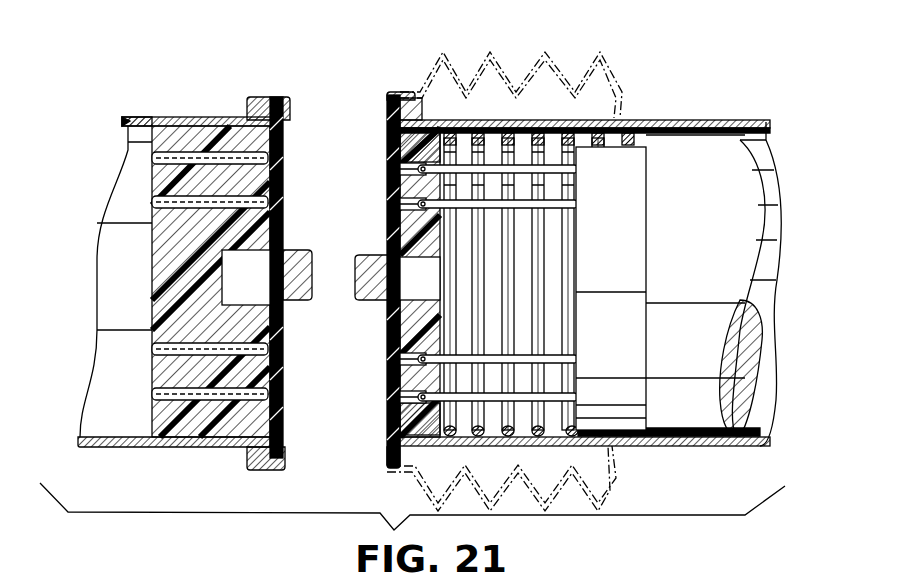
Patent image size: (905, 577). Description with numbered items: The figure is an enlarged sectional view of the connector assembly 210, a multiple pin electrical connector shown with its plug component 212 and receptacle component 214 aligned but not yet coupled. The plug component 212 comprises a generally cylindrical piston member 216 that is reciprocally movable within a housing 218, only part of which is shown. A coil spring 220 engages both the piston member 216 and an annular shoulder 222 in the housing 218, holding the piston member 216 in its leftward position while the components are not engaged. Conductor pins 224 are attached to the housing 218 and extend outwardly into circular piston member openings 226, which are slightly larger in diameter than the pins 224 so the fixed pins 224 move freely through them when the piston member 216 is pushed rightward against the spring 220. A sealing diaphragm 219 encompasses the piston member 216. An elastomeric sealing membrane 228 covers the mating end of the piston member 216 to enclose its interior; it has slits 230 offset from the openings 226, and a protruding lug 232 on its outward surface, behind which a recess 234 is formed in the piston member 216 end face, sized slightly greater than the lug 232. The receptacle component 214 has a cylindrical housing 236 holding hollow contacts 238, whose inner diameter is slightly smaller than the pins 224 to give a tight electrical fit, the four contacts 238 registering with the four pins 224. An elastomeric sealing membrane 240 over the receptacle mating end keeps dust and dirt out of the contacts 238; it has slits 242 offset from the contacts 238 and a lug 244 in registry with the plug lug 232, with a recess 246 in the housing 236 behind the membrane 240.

The connector assembly 210 is at (326, 84).
The plug component 212 is at (618, 122).
The receptacle component 214 is at (200, 135).
The piston member 216 is at (397, 95).
The housing 218 is at (630, 185).
The sealing diaphragm 219 is at (526, 72).
The coil spring 220 is at (622, 440).
The annular shoulder 222 is at (690, 446).
The conductor pins 224 is at (575, 168).
The piston member openings 226 is at (412, 202).
The elastomeric sealing membrane 228 is at (388, 456).
The slits 230 is at (400, 158).
The lug 232 is at (365, 288).
The recess 234 is at (437, 287).
The receptacle housing 236 is at (122, 121).
The contacts 238 is at (152, 202).
The elastomeric sealing membrane 240 is at (270, 98).
The slits 242 is at (283, 195).
The lug 244 is at (287, 298).
The recess 246 is at (264, 283).